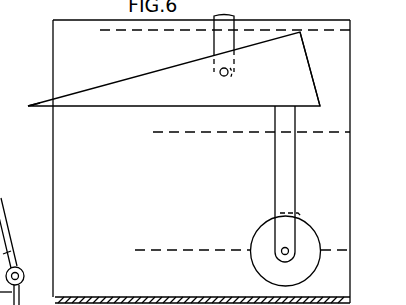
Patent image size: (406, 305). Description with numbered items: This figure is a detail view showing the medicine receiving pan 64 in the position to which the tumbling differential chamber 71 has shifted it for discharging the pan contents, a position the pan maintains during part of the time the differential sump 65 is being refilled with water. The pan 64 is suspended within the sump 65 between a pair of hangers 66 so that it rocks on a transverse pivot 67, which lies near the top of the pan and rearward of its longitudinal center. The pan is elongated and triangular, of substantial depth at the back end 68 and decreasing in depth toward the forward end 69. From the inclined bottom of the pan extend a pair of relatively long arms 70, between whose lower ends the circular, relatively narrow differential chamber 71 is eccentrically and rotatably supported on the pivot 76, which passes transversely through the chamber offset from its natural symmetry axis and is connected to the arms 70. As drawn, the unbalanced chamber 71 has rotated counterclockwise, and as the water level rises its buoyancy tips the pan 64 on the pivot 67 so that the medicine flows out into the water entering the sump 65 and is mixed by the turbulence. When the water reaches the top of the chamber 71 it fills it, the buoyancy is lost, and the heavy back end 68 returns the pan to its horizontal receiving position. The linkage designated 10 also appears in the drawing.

The rod 10 is at (12, 241).
The medicine receiving pan 64 is at (160, 105).
The differential sump 65 is at (41, 0).
The hangers 66 is at (215, 42).
The transverse pivot 67 is at (220, 73).
The back end of pan 68 is at (300, 78).
The forward end of pan 69 is at (28, 99).
The arms 70 is at (283, 176).
The tumbling differential chamber 71 is at (265, 235).
The pivot 76 is at (282, 254).